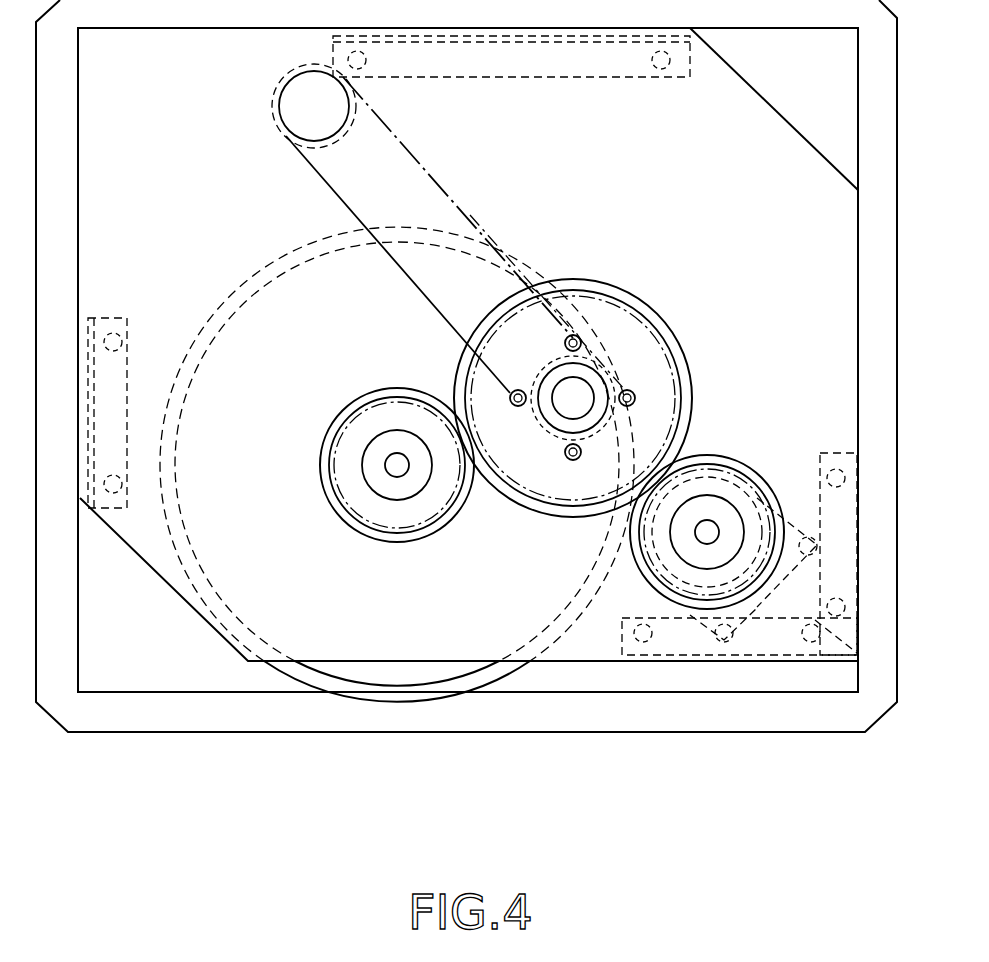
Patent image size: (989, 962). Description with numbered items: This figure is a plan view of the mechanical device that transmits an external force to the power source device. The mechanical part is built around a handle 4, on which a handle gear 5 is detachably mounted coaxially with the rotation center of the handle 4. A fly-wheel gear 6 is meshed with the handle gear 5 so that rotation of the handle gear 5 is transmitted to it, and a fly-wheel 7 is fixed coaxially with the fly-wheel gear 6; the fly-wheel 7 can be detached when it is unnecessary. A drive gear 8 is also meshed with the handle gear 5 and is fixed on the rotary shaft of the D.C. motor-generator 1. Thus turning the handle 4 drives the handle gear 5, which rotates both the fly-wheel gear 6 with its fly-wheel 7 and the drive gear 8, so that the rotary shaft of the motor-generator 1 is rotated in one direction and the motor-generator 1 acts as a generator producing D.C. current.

The D.C. motor-generator 1 is at (745, 610).
The handle 4 is at (441, 192).
The handle gear 5 is at (577, 278).
The fly-wheel gear 6 is at (352, 524).
The fly-wheel 7 is at (363, 702).
The drive gear 8 is at (706, 456).